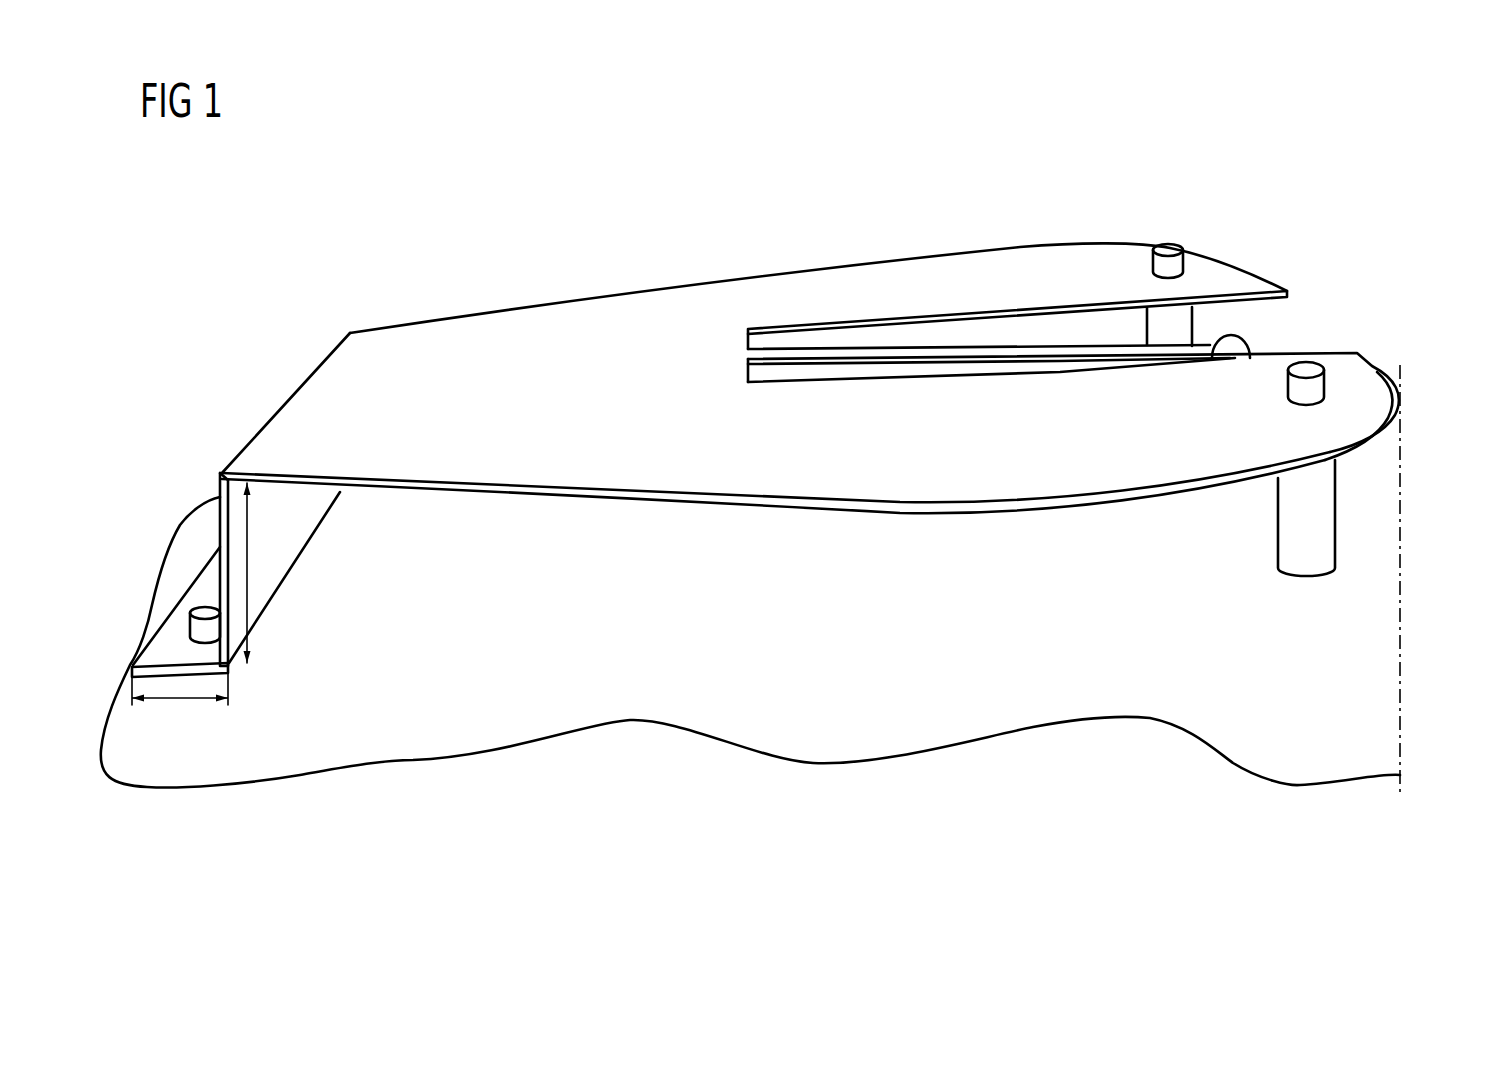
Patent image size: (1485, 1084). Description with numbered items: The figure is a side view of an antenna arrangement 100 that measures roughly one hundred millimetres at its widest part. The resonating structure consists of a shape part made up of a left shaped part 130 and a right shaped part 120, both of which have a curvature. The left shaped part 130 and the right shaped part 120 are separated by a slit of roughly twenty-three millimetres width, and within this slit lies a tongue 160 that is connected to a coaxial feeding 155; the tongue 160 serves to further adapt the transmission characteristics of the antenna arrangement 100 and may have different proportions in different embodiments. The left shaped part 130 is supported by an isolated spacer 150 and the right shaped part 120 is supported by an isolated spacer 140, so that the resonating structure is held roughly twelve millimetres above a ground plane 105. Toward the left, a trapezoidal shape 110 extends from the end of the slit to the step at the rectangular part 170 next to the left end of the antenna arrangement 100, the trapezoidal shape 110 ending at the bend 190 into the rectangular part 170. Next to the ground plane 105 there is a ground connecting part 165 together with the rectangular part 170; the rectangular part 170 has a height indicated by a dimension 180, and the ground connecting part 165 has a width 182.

The antenna arrangement 100 is at (782, 243).
The ground plane 105 is at (560, 600).
The trapezoidal shape 110 is at (566, 327).
The right shaped part 120 is at (1308, 433).
The left shaped part 130 is at (1213, 277).
The isolated spacer 140 is at (1313, 522).
The isolated spacer 150 is at (1177, 322).
The coaxial feeding 155 is at (1238, 347).
The tongue 160 is at (927, 356).
The ground connecting part 165 is at (173, 647).
The rectangular part 170 is at (221, 565).
The height dimension 180 is at (250, 568).
The width 182 is at (182, 698).
The bend 190 is at (220, 473).